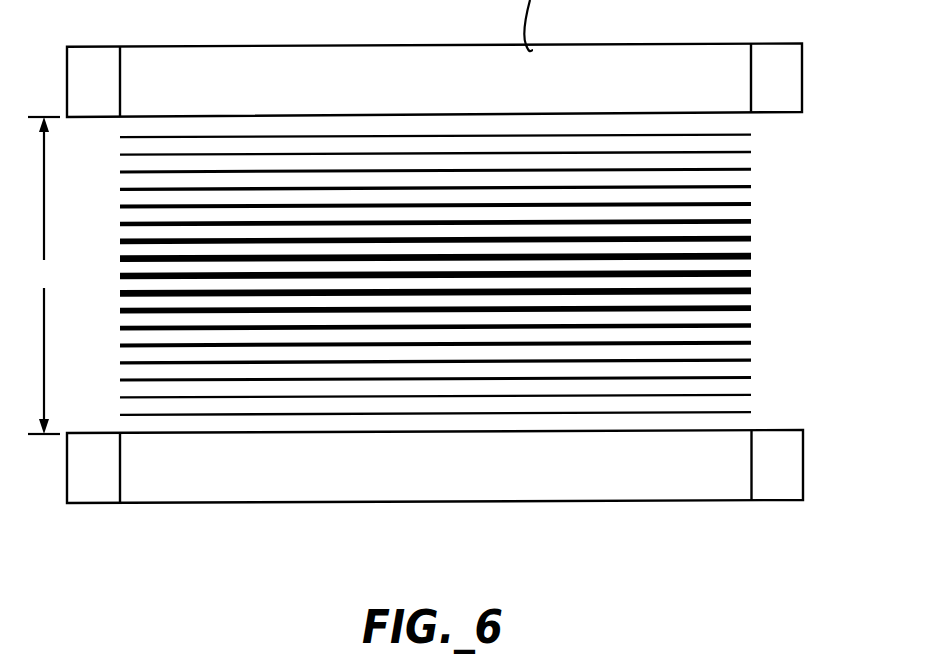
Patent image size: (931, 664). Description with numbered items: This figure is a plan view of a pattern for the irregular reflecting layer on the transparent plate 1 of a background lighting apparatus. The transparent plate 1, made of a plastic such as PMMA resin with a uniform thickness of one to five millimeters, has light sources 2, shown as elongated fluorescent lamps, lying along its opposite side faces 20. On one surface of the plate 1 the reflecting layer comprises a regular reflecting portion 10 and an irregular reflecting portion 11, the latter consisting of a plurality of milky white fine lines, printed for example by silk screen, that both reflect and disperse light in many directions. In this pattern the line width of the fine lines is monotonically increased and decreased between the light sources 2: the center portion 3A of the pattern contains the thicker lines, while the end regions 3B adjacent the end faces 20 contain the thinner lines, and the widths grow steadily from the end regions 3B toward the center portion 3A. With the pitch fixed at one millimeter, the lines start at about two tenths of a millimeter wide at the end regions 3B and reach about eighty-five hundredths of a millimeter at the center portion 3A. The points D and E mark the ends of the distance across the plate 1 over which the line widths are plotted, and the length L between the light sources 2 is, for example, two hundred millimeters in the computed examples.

The transparent plate 1 is at (752, 362).
The light source 2 is at (540, 492).
The center portion 3A is at (758, 280).
The end region 3B is at (758, 162).
The regular reflecting portion 10 is at (745, 230).
The irregular reflecting portion 11 is at (745, 312).
The side face 20 is at (668, 112).
The point D is at (300, 128).
The point E is at (310, 425).
The length L is at (44, 275).